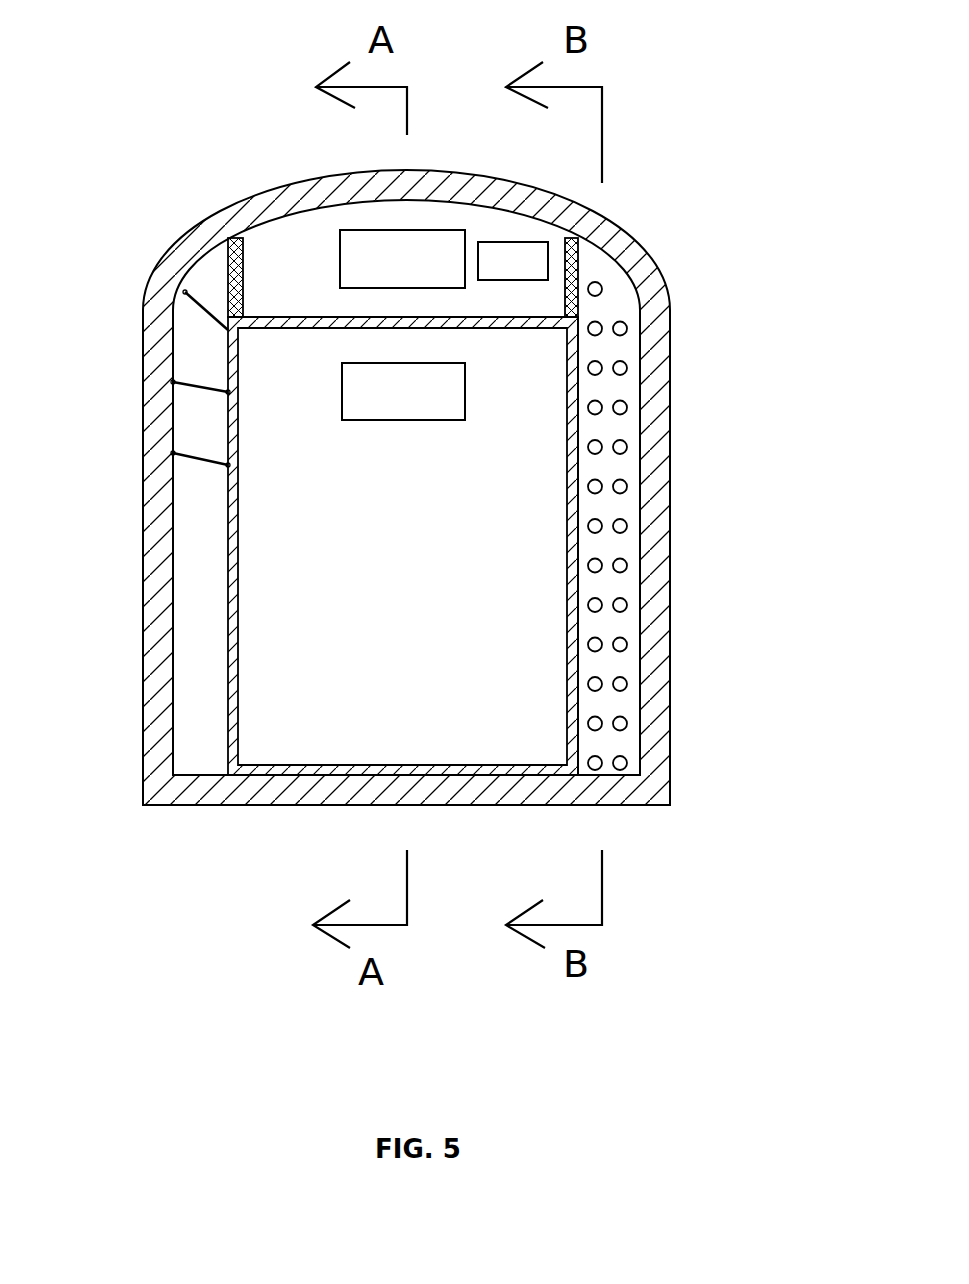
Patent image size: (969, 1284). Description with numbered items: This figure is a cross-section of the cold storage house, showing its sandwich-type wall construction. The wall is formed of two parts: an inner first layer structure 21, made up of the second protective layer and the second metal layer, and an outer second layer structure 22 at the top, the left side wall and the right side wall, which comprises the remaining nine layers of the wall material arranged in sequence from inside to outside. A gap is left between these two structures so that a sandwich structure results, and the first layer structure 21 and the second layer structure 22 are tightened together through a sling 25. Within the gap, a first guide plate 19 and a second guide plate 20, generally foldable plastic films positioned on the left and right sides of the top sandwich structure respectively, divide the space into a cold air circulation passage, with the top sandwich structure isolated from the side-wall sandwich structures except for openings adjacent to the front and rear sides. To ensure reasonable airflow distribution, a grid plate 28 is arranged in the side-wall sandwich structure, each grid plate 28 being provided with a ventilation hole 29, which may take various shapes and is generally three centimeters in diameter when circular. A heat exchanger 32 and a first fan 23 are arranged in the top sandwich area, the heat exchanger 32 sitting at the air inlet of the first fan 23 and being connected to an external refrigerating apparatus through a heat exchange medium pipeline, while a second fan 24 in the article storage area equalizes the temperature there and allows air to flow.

The first guide plate 19 is at (205, 249).
The second guide plate 20 is at (578, 282).
The first layer structure 21 is at (578, 662).
The second layer structure 22 is at (670, 567).
The first fan 23 is at (445, 288).
The second fan 24 is at (403, 420).
The sling 25 is at (200, 458).
The grid plate 28 is at (623, 426).
The ventilation hole 29 is at (623, 405).
The heat exchanger 32 is at (548, 248).